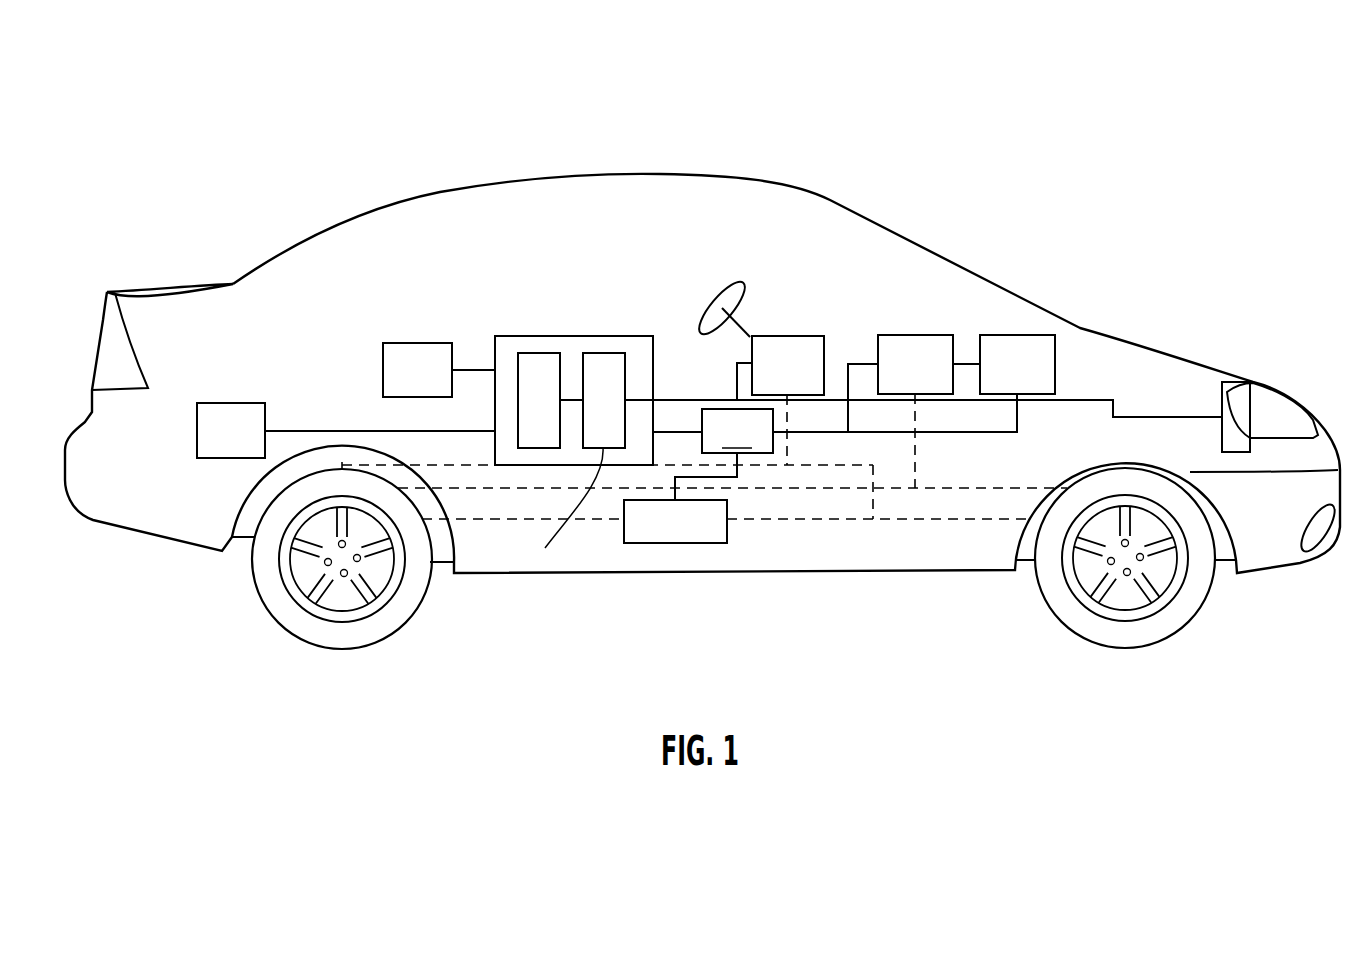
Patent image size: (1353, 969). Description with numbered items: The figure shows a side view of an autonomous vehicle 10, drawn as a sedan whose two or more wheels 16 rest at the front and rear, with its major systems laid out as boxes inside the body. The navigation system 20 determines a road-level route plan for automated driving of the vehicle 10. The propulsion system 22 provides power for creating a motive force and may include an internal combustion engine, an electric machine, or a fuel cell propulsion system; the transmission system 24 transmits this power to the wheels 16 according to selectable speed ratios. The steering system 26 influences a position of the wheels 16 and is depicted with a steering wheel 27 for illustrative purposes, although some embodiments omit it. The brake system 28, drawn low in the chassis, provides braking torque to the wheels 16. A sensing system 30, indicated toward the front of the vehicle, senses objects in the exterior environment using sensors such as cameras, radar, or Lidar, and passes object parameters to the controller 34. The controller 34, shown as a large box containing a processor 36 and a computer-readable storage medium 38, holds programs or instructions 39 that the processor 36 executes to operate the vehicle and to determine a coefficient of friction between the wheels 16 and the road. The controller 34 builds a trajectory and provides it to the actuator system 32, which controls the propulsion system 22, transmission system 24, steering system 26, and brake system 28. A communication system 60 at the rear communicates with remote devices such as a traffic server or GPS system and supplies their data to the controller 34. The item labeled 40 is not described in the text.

The autonomous vehicle 10 is at (775, 94).
The wheels 16 is at (308, 642).
The navigation system 20 is at (420, 343).
The propulsion system 22 is at (1017, 335).
The transmission system 24 is at (915, 335).
The steering system 26 is at (790, 336).
The steering wheel 27 is at (735, 285).
The brake system 28 is at (677, 543).
The sensing system 30 is at (1197, 336).
The actuator system 32 is at (846, 431).
The controller 34 is at (590, 336).
The processor 36 is at (537, 353).
The computer-readable storage medium 38 is at (608, 353).
The programs or instructions 39 is at (545, 548).
The headlamp assembly 40 is at (1233, 452).
The communication system 60 is at (232, 403).